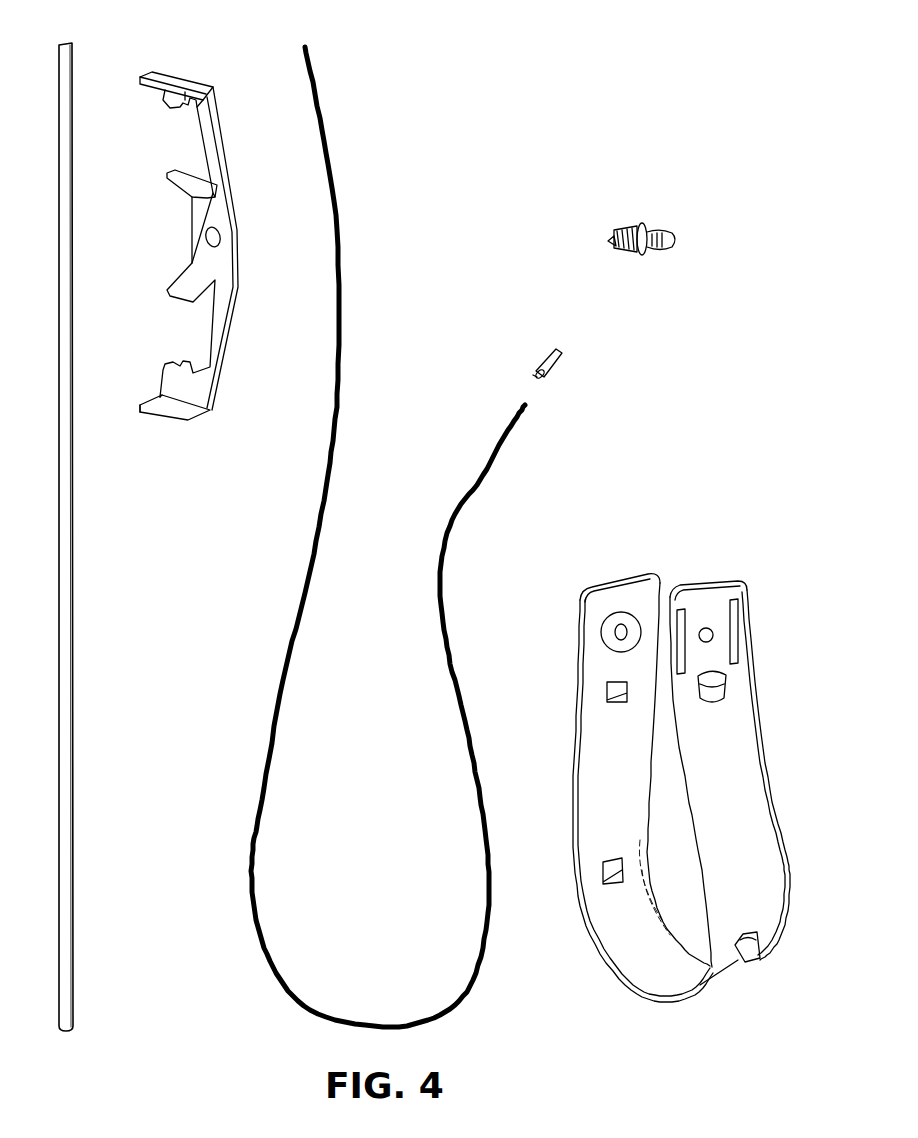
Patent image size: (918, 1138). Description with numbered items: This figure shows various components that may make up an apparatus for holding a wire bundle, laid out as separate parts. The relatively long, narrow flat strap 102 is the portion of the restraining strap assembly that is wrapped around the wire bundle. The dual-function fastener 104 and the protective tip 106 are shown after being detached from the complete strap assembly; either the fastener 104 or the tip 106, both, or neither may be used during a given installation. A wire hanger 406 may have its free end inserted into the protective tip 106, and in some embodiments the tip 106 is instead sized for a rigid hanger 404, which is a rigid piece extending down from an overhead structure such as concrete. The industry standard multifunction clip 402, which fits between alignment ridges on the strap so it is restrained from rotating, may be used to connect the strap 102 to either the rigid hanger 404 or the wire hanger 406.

The flat strap 102 is at (703, 582).
The dual-function fastener 104 is at (675, 240).
The protective tip 106 is at (568, 370).
The multifunction clip 402 is at (190, 72).
The rigid hanger 404 is at (85, 545).
The wire hanger 406 is at (325, 88).